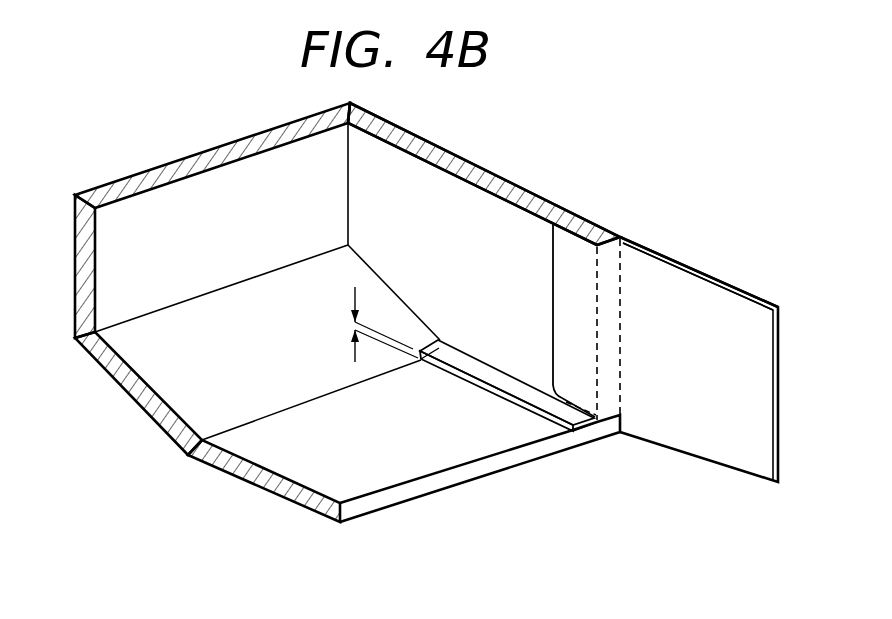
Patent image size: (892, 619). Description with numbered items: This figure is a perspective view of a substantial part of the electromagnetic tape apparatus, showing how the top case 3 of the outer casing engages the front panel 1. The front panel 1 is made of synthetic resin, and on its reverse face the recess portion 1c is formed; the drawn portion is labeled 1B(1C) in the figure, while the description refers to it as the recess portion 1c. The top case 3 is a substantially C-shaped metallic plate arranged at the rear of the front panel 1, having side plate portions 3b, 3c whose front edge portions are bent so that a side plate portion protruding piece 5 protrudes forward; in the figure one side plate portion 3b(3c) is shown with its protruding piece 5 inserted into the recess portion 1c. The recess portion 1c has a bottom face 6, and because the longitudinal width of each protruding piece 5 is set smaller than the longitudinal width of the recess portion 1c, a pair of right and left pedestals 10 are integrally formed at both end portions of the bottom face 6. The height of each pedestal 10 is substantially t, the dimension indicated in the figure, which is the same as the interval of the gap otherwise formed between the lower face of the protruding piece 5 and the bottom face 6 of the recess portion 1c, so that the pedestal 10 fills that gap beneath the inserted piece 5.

The front panel 1 is at (212, 136).
The recess portion 1c is at (470, 210).
The upper edge portion of side wall 1B is at (516, 174).
The upper edge portion of side wall 1C is at (558, 204).
The top case 3 is at (719, 376).
The side plate portion 3b is at (723, 263).
The side plate portion 3c is at (683, 258).
The side plate portion protruding piece 5 is at (573, 333).
The bottom face 6 is at (287, 460).
The pedestal 10 is at (497, 378).
The pedestal height t is at (355, 325).